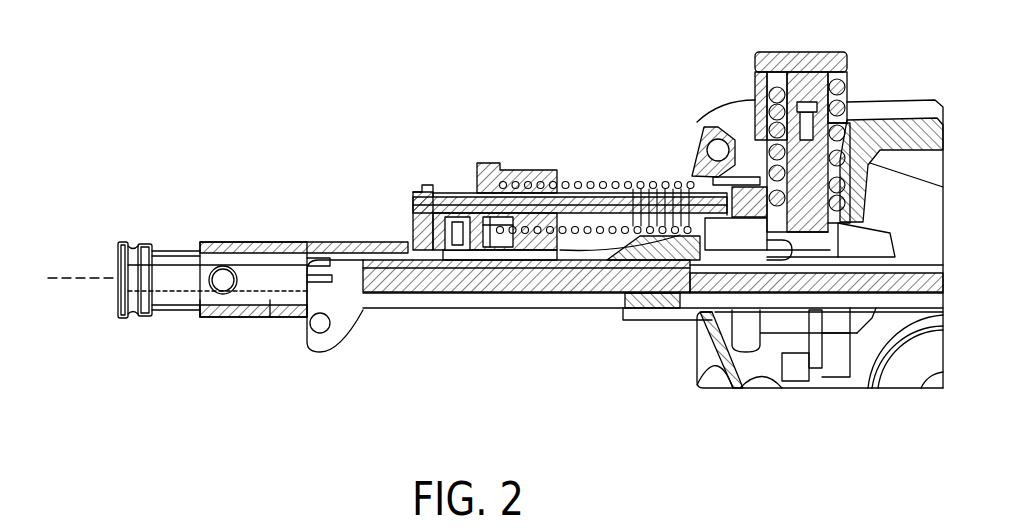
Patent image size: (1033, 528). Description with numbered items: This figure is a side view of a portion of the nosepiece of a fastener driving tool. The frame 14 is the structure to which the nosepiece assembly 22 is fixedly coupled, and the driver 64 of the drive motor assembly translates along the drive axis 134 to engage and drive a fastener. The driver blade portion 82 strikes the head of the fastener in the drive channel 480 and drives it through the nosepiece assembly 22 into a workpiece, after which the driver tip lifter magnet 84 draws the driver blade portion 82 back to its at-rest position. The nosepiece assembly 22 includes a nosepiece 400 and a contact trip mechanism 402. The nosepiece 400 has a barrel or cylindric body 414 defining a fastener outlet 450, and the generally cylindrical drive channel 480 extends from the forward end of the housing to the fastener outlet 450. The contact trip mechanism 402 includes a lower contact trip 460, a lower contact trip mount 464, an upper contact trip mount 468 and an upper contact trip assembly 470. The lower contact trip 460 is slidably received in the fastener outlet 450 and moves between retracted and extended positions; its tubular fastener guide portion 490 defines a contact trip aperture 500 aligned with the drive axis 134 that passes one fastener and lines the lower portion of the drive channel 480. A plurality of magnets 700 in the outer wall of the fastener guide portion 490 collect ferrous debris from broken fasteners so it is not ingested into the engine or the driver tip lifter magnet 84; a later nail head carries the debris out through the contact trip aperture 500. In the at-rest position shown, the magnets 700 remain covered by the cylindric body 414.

The nosepiece assembly 22 is at (172, 178).
The contact trip mechanism 402 is at (387, 207).
The upper contact trip assembly 470 is at (465, 193).
The upper contact trip mount 468 is at (700, 128).
The frame 14 is at (863, 105).
The driver tip lifter magnet 84 is at (756, 232).
The contact trip aperture 500 is at (128, 268).
The drive axis 134 is at (70, 278).
The fastener guide portion 490 is at (182, 250).
The cylindric body 414 is at (245, 250).
The drive channel 480 is at (257, 282).
The fastener outlet 450 is at (200, 274).
The magnets 700 is at (222, 298).
The lower contact trip 460 is at (126, 328).
The nosepiece 400 is at (357, 303).
The lower contact trip mount 464 is at (423, 246).
The driver blade portion 82 is at (613, 287).
The driver 64 is at (878, 282).